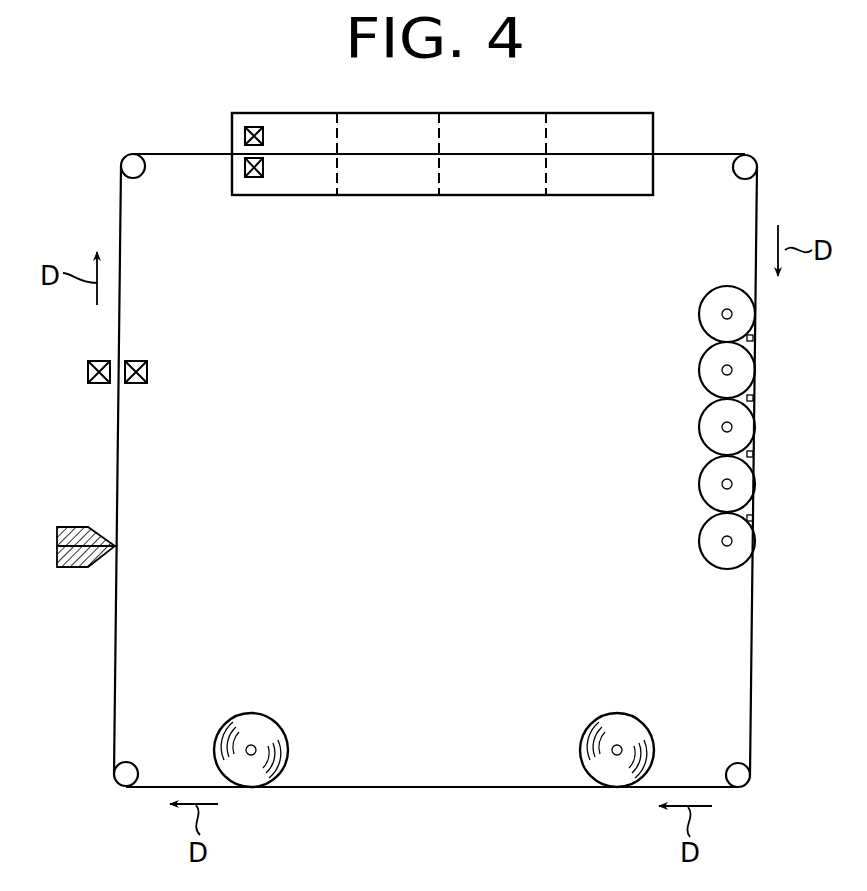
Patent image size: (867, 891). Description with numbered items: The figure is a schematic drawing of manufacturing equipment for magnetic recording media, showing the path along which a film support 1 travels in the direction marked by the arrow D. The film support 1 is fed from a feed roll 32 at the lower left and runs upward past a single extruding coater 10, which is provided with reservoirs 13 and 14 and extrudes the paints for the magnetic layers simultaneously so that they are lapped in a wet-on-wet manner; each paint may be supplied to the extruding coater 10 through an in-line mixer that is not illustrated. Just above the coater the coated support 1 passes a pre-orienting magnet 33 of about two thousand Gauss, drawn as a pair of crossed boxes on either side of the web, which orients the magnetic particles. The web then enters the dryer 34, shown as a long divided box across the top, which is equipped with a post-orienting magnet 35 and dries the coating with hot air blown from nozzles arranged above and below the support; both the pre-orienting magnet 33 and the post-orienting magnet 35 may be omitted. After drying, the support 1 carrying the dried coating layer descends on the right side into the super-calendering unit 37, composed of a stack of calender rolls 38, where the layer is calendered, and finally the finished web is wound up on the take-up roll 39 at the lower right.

The film support 1 is at (115, 705).
The extruding coater 10 is at (57, 542).
The reservoir 13 is at (75, 556).
The reservoir 14 is at (78, 537).
The feed roll 32 is at (256, 745).
The pre-orienting magnet 33 is at (150, 372).
The dryer 34 is at (393, 208).
The post-orienting magnet 35 is at (254, 181).
The super-calendering unit 37 is at (663, 427).
The calender roll 38 is at (715, 312).
The take-up roll 39 is at (617, 748).